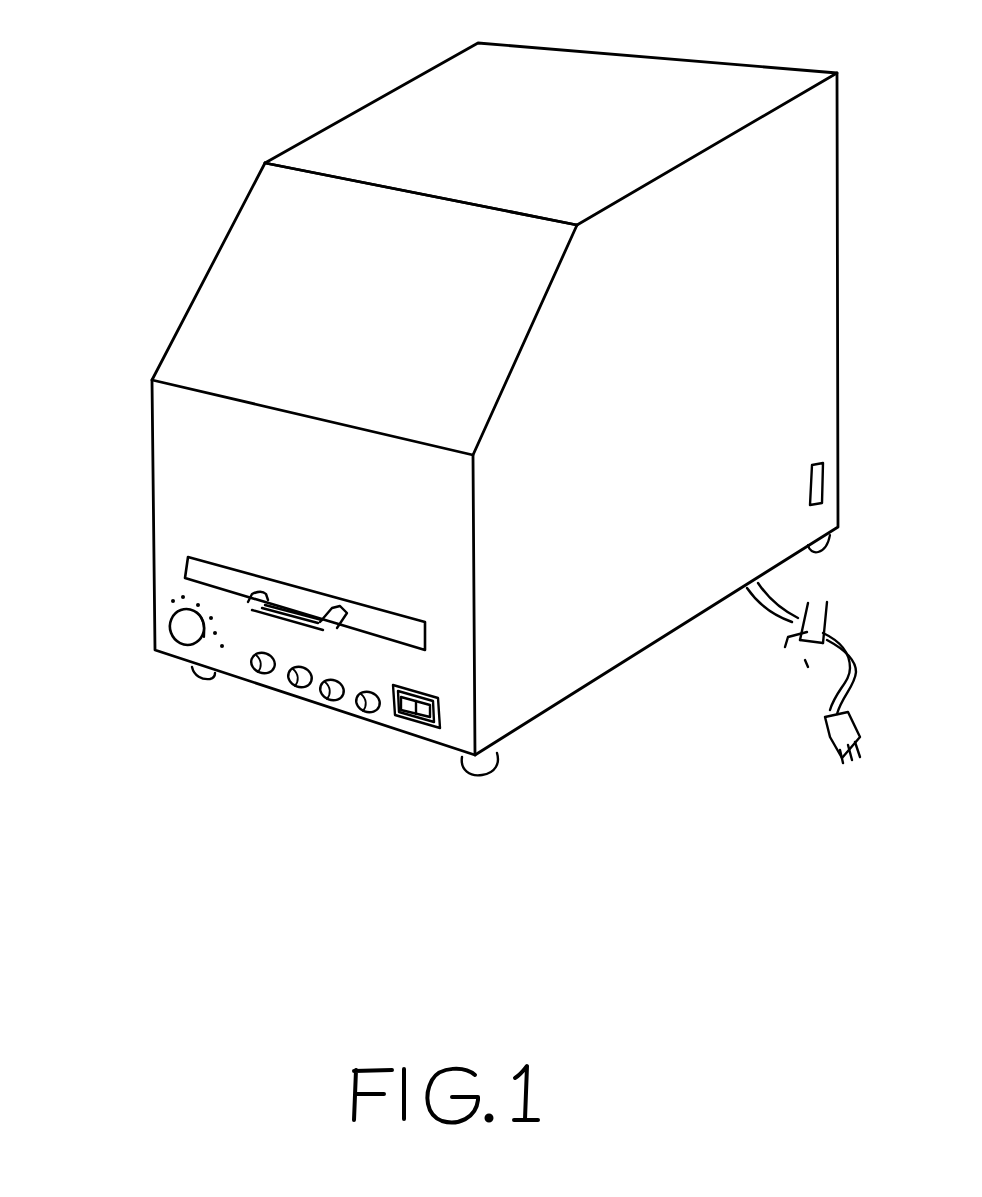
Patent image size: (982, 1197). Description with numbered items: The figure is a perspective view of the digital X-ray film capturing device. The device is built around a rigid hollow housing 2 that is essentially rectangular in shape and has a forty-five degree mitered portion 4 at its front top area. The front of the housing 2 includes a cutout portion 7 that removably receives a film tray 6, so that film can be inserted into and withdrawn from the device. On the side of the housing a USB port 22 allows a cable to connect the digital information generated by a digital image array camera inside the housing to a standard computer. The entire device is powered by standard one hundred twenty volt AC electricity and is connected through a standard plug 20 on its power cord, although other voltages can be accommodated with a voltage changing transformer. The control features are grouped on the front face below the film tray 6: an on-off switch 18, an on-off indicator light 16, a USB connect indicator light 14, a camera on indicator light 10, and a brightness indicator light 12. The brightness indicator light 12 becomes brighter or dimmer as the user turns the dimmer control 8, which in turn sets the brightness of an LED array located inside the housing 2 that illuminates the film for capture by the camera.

The rigid hollow housing 2 is at (413, 15).
The mitered portion 4 is at (240, 265).
The film tray 6 is at (197, 568).
The cutout portion 7 is at (218, 557).
The dimmer control 8 is at (185, 632).
The camera on indicator light 10 is at (258, 672).
The brightness indicator light 12 is at (298, 692).
The USB connect indicator light 14 is at (325, 708).
The on-off indicator light 16 is at (360, 720).
The on-off switch 18 is at (420, 743).
The plug 20 is at (818, 743).
The USB port 22 is at (822, 495).